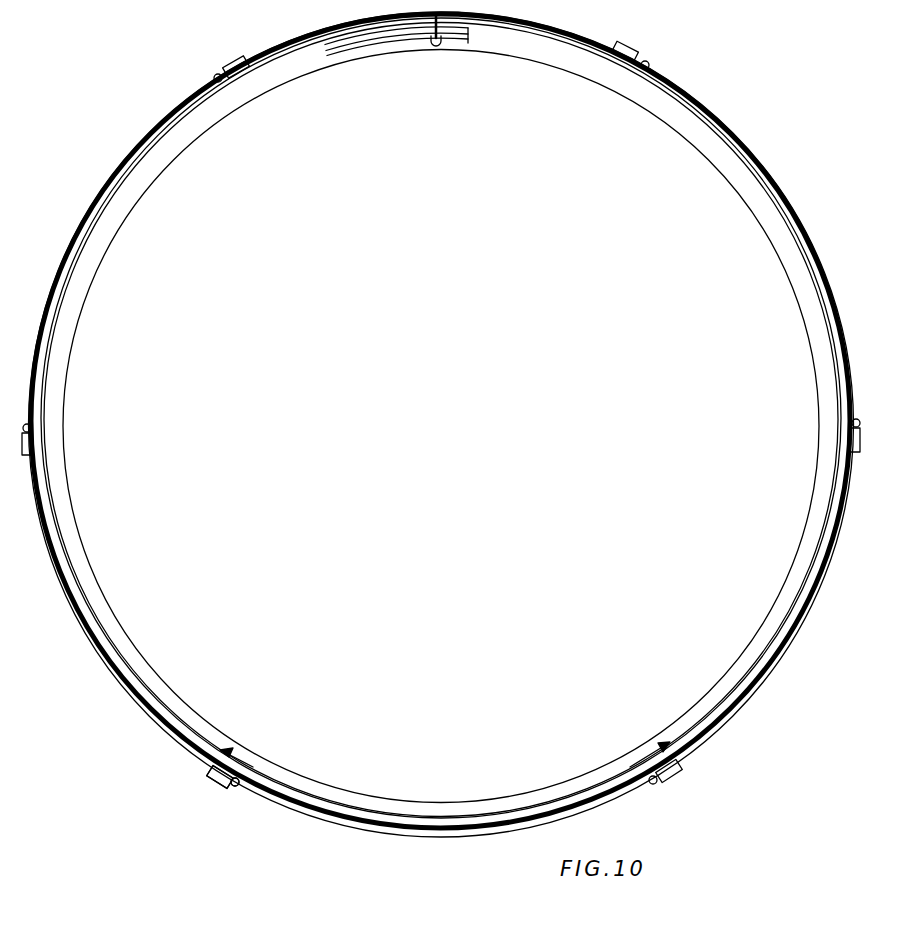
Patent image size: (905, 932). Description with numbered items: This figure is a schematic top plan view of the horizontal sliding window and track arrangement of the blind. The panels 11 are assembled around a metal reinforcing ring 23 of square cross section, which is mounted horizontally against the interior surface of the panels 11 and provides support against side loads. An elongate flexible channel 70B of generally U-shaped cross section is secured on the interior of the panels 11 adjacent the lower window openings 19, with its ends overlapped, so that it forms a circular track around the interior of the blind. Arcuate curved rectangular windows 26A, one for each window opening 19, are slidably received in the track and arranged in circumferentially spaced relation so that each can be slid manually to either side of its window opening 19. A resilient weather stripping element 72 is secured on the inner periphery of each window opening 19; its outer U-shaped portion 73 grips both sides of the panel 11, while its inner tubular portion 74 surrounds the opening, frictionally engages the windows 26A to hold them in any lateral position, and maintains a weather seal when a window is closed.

The panels 11 is at (268, 50).
The window opening 19 is at (83, 218).
The reinforcing ring 23 is at (348, 800).
The arcuate curved rectangular window 26A is at (118, 195).
The elongate flexible channel 70B is at (481, 32).
The resilient weather stripping element 72 is at (220, 72).
The outer U-shaped portion 73 is at (215, 775).
The inner tubular portion 74 is at (237, 788).